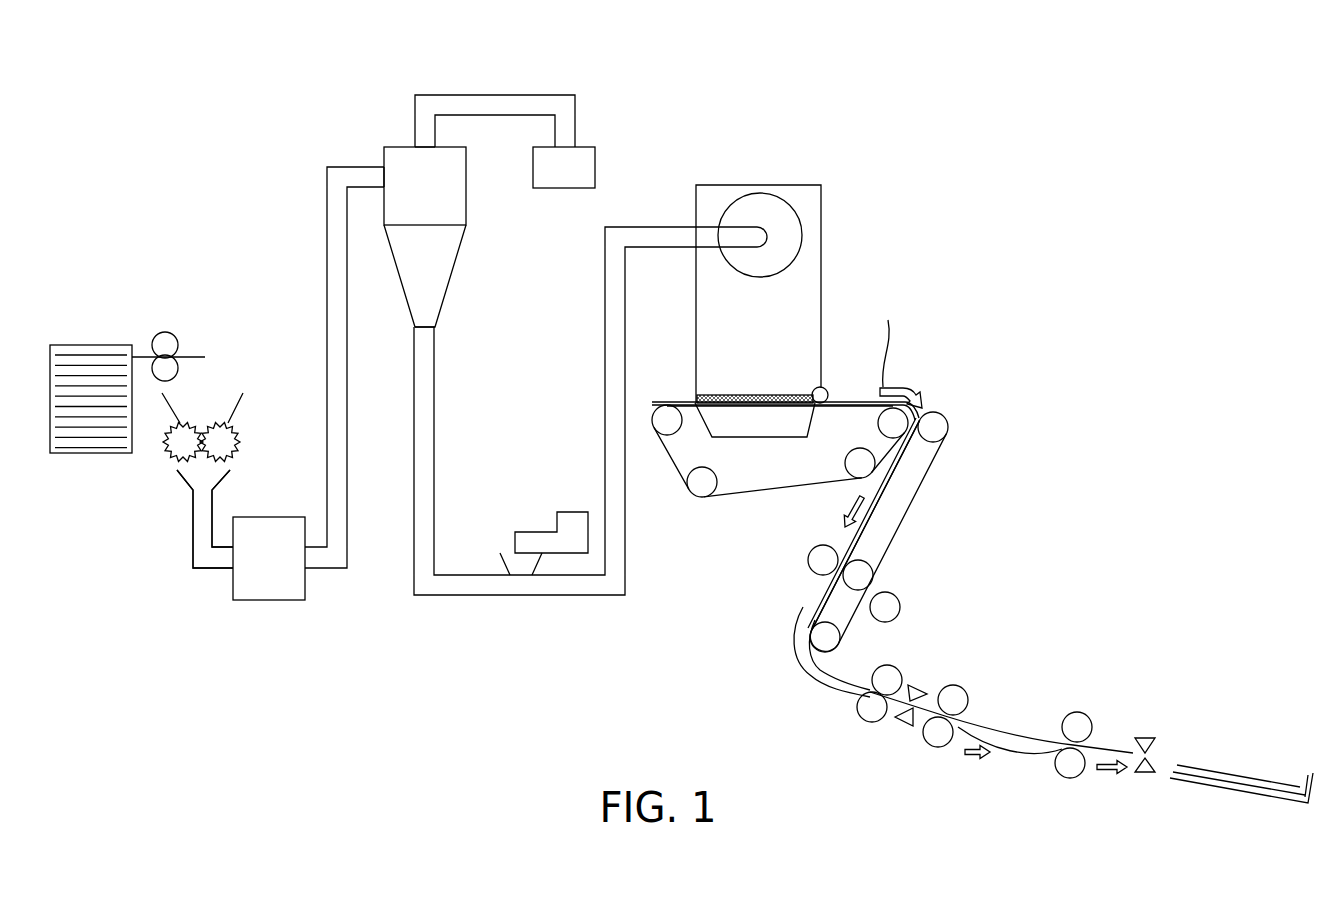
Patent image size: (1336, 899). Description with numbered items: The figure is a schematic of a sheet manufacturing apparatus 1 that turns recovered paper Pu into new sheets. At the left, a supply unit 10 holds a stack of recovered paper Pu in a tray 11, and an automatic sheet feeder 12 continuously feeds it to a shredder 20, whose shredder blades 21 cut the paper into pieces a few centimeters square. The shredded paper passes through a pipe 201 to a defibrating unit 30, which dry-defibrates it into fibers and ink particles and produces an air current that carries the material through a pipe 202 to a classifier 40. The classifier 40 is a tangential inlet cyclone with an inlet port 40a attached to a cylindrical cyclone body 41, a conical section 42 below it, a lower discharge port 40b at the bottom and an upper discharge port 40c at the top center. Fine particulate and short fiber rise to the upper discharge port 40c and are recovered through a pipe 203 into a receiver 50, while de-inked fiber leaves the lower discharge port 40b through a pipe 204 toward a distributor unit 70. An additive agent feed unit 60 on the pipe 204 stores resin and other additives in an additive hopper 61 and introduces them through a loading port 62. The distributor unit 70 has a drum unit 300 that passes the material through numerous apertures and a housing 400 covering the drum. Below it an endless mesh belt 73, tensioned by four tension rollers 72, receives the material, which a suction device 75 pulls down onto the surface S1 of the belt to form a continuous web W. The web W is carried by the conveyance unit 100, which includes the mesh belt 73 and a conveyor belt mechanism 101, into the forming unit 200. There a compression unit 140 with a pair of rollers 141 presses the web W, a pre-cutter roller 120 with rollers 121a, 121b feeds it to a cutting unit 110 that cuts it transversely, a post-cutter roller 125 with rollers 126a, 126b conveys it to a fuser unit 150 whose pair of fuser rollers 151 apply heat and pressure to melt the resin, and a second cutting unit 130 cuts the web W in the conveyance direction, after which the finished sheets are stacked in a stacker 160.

The sheet manufacturing apparatus 1 is at (714, 71).
The supply unit 10 is at (96, 334).
The tray 11 is at (71, 455).
The automatic sheet feeder 12 is at (147, 329).
The recovered paper Pu is at (193, 352).
The shredder 20 is at (251, 404).
The shredder blades 21 is at (240, 442).
The defibrating unit 30 is at (271, 504).
The pipe 201 is at (192, 536).
The pipe 202 is at (327, 217).
The classifier 40 is at (432, 213).
The cyclone body 41 is at (456, 187).
The conical section 42 is at (440, 268).
The inlet port 40a is at (363, 172).
The lower discharge port 40b is at (425, 352).
The upper discharge port 40c is at (413, 152).
The pipe 203 is at (505, 105).
The receiver 50 is at (605, 136).
The pipe 204 is at (603, 370).
The additive agent feed unit 60 is at (523, 515).
The additive hopper 61 is at (573, 522).
The loading port 62 is at (500, 555).
The distributor unit 70 is at (770, 342).
The housing 400 is at (707, 200).
The drum unit 300 is at (762, 203).
The surface of the mesh belt S1 is at (676, 402).
The tension rollers 72 is at (660, 412).
The mesh belt 73 is at (722, 497).
The suction device 75 is at (720, 424).
The web W is at (843, 402).
The forming unit 200 is at (1001, 395).
The conveyance unit 100 is at (931, 524).
The conveyor belt mechanism 101 is at (943, 485).
The pair of rollers 141 is at (810, 563).
The compression unit 140 is at (809, 591).
The pre-cutter roller 120 is at (898, 657).
The roller 121a is at (890, 667).
The roller 121b is at (860, 720).
The cutting unit 110 is at (894, 726).
The post-cutter roller 125 is at (982, 692).
The roller 126a is at (955, 695).
The roller 126b is at (940, 750).
The fuser unit 150 is at (1102, 737).
The fuser rollers 151 is at (1083, 720).
The second cutting unit 130 is at (1153, 729).
The stacker 160 is at (1263, 809).